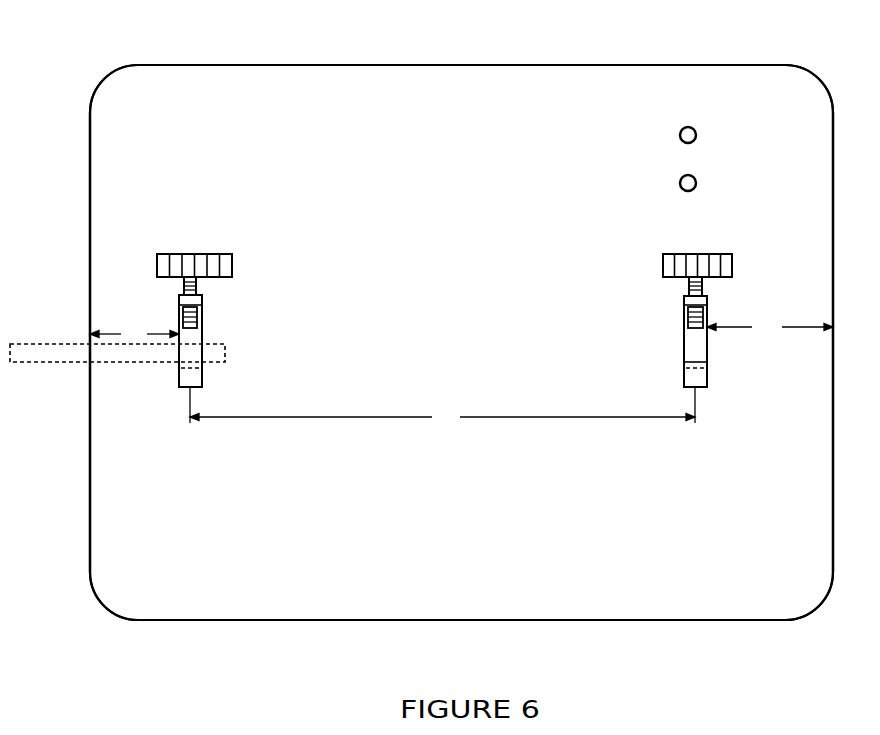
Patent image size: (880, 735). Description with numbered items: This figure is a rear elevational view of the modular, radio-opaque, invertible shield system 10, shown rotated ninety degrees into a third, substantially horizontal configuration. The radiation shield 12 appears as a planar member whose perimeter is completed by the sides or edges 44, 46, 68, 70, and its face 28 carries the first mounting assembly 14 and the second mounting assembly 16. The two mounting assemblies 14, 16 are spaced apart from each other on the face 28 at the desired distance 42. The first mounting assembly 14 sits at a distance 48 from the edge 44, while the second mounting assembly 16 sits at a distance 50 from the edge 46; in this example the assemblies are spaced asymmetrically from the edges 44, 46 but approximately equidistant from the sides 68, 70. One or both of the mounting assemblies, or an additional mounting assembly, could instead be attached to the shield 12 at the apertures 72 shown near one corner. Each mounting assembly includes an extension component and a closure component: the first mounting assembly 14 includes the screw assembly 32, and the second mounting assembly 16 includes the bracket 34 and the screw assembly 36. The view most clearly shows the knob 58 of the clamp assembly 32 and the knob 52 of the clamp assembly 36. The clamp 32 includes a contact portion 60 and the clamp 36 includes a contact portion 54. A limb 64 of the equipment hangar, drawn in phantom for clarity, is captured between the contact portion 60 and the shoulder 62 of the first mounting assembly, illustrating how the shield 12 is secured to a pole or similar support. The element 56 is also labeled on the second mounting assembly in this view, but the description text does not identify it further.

The modular, radio-opaque, invertible shield system 10 is at (253, 55).
The radiation shield 12 is at (444, 632).
The first mounting assembly 14 is at (198, 295).
The second mounting assembly 16 is at (683, 318).
The face 28 is at (470, 578).
The screw assembly 32 is at (226, 288).
The bracket 34 is at (708, 378).
The screw assembly 36 is at (722, 288).
The desired distance 42 is at (442, 409).
The edge 44 is at (90, 233).
The edge 46 is at (833, 400).
The distance 48 is at (134, 335).
The distance 50 is at (770, 328).
The knob 52 is at (662, 264).
The contact portion 54 is at (683, 324).
The second slot 56 is at (692, 345).
The knob 58 is at (157, 268).
The contact portion 60 is at (181, 325).
The shoulder 62 is at (194, 344).
The limb 64 is at (65, 362).
The side 68 is at (670, 65).
The side 70 is at (635, 620).
The apertures 72 is at (695, 178).